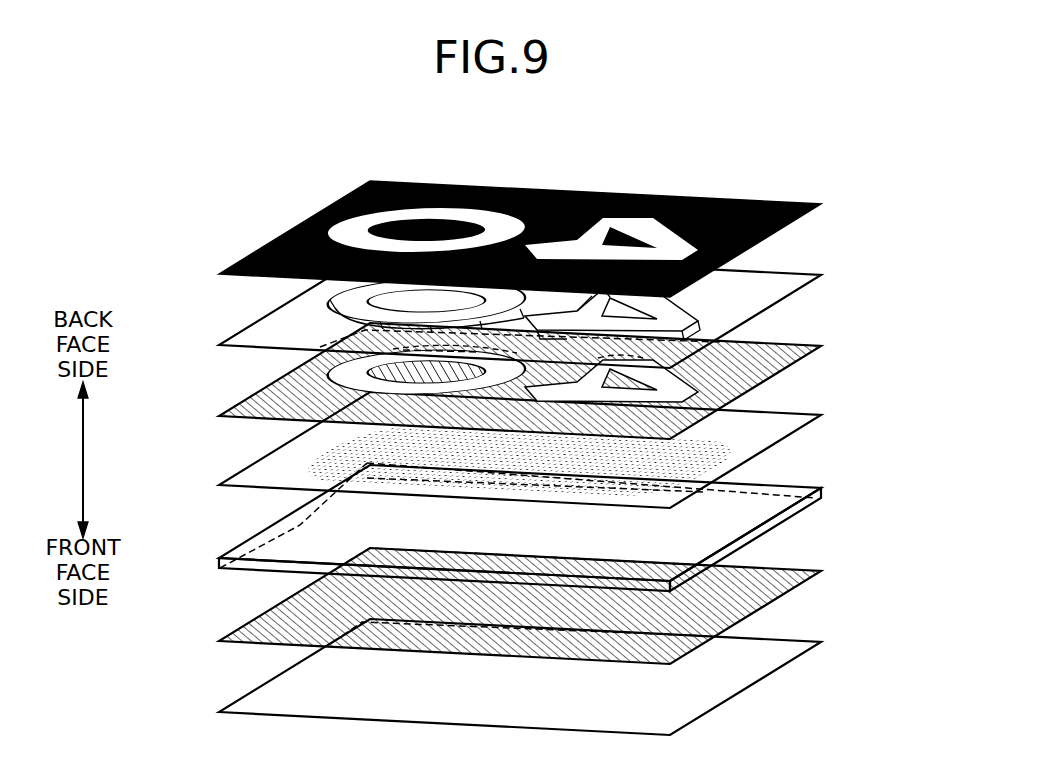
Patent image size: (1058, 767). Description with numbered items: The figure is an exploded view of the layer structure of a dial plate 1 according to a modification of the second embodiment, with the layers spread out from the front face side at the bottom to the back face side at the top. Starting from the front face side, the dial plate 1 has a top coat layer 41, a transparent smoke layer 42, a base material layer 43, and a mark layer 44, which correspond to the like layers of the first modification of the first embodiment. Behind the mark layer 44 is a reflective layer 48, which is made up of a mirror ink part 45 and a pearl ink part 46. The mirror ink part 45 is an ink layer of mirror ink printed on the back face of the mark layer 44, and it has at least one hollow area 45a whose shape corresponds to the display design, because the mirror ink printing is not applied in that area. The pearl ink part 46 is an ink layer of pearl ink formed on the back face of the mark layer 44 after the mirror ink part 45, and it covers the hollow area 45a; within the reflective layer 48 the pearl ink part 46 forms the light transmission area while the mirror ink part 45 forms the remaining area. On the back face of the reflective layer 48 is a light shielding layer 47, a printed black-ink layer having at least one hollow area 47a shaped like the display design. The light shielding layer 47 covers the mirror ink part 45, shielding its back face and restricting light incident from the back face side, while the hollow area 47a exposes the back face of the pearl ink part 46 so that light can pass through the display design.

The dial plate 1 is at (308, 141).
The top coat layer 41 is at (752, 665).
The transparent smoke layer 42 is at (754, 588).
The base material layer 43 is at (752, 511).
The mark layer 44 is at (752, 434).
The mirror ink part 45 is at (529, 384).
The hollow area 45a is at (527, 392).
The pearl ink part 46 is at (706, 306).
The light shielding layer 47 is at (560, 214).
The hollow area 47a is at (498, 216).
The reflective layer 48 is at (561, 348).